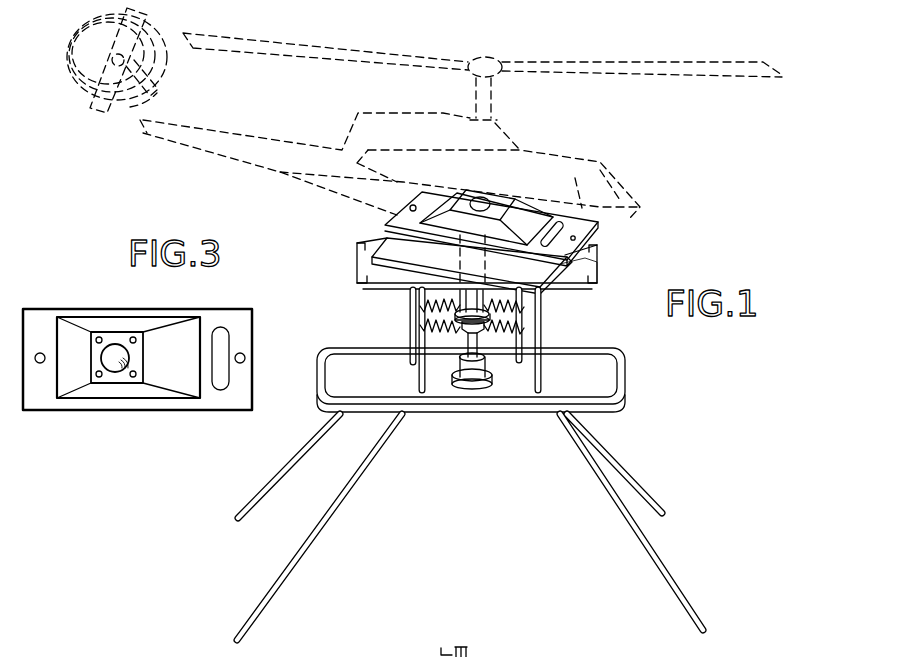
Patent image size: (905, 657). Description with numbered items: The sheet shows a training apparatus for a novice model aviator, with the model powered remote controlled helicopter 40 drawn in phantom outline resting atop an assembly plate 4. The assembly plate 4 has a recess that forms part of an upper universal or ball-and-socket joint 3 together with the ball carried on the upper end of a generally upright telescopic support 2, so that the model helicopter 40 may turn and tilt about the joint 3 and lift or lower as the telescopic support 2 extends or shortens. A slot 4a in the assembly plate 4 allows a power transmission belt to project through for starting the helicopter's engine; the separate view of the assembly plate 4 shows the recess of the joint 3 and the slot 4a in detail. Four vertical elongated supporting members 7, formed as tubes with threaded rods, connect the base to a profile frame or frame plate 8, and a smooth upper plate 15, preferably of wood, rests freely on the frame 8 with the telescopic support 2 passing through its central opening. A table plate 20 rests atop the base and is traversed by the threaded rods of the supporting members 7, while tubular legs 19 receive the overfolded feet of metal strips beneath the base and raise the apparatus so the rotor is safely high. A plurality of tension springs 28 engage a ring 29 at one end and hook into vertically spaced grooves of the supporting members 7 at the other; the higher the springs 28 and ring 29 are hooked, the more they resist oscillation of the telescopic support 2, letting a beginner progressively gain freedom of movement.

In FIG. 1, the model powered remote controlled helicopter 40 is at (567, 137).
In FIG. 1, the universal joint or ball-and-socket joint 3 is at (483, 203).
In FIG. 3, the universal joint or ball-and-socket joint 3 is at (113, 348).
In FIG. 1, the assembly plate 4 is at (600, 224).
In FIG. 3, the assembly plate 4 is at (166, 333).
In FIG. 3, the slot 4a is at (220, 333).
In FIG. 1, the frame plate 8 is at (355, 255).
In FIG. 1, the upper plate 15 is at (560, 282).
In FIG. 1, the vertical elongated supporting members 7 is at (542, 318).
In FIG. 1, the tension springs 28 is at (437, 317).
In FIG. 1, the ring 29 is at (467, 325).
In FIG. 1, the telescopic support 2 is at (486, 340).
In FIG. 1, the table plate 20 is at (595, 375).
In FIG. 1, the tubular legs 19 is at (625, 508).